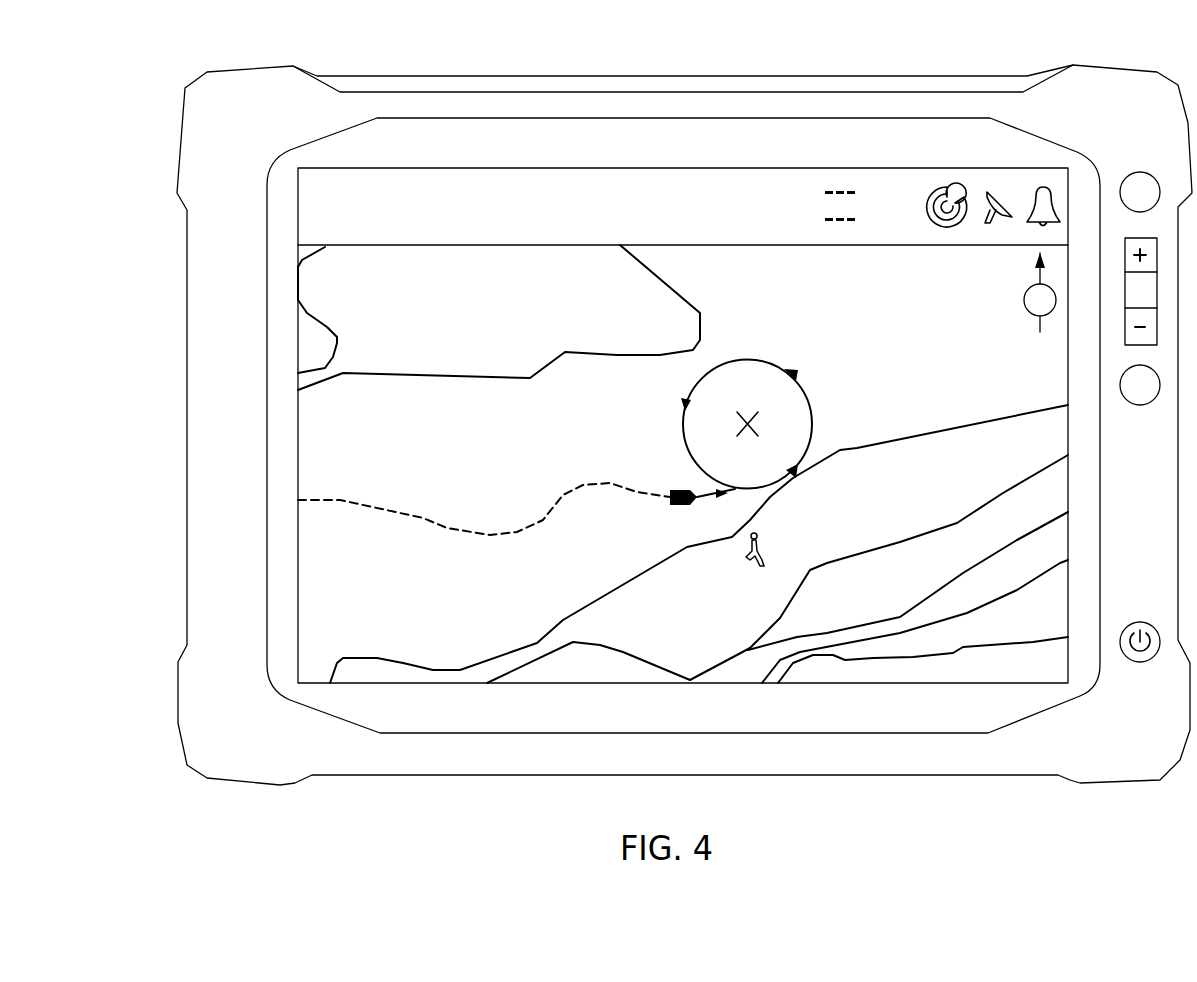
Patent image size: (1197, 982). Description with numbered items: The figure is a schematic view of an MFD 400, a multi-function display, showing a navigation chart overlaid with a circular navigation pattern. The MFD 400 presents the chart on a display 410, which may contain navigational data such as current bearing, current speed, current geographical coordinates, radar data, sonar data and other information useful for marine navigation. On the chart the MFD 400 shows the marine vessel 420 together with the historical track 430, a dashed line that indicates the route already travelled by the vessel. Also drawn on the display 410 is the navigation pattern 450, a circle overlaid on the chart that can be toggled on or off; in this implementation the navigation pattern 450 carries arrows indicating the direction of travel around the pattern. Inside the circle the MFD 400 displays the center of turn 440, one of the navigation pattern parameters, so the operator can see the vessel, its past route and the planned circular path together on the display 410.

The MFD 400 is at (437, 753).
The display 410 is at (373, 177).
The marine vessel 420 is at (678, 488).
The historical track 430 is at (516, 531).
The center of turn 440 is at (757, 429).
The navigation pattern 450 is at (745, 362).